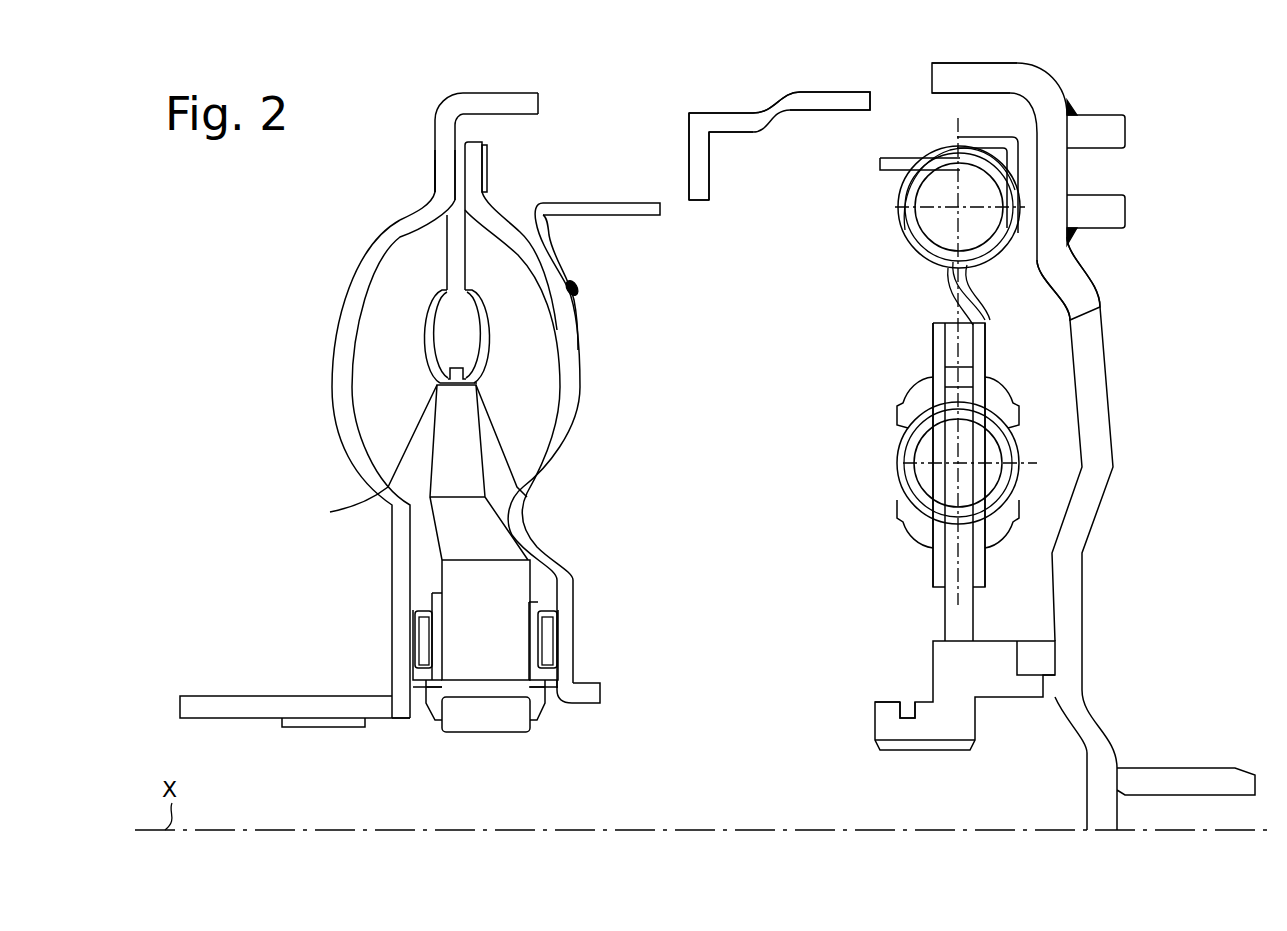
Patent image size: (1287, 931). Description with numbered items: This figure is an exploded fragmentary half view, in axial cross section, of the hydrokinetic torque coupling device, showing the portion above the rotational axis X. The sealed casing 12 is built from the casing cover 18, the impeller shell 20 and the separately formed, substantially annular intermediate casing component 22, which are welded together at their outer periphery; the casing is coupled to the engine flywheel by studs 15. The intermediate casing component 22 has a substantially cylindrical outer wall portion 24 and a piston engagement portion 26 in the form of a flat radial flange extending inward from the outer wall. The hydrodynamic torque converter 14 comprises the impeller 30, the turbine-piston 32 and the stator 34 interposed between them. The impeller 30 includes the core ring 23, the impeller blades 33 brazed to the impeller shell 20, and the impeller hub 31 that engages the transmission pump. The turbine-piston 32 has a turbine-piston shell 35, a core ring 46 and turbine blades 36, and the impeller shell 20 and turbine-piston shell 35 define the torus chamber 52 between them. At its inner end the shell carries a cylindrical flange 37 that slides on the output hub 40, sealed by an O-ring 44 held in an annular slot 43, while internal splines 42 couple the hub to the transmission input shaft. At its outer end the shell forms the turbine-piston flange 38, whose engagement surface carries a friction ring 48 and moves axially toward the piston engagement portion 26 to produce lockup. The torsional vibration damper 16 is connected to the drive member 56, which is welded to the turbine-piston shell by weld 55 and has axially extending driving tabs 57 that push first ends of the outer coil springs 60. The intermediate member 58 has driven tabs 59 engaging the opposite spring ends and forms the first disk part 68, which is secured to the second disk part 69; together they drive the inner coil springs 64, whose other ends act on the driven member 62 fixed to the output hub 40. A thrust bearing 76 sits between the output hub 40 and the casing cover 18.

The sealed casing 12 is at (1059, 78).
The hydrodynamic torque converter 14 is at (350, 267).
The studs 15 is at (1120, 131).
The torsional vibration damper 16 is at (916, 293).
The casing cover 18 is at (1115, 420).
The impeller shell 20 is at (330, 391).
The intermediate casing component 22 is at (770, 96).
The core ring 23 is at (432, 308).
The outer wall portion 24 is at (743, 118).
The piston engagement portion 26 is at (698, 202).
The impeller 30 is at (359, 386).
The impeller hub 31 is at (232, 705).
The turbine-piston 32 is at (556, 386).
The impeller blades 33 is at (380, 312).
The stator 34 is at (428, 458).
The turbine-piston shell 35 is at (563, 417).
The turbine blades 36 is at (523, 413).
The cylindrical flange 37 is at (587, 705).
The turbine-piston flange 38 is at (473, 187).
The output hub 40 is at (960, 678).
The internal splines 42 is at (922, 745).
The annular slot 43 is at (910, 713).
The O-ring 44 is at (895, 710).
The core ring 46 is at (483, 318).
The friction ring 48 is at (490, 157).
The torus chamber 52 is at (470, 342).
The weld 55 is at (578, 290).
The drive member 56 is at (560, 257).
The driving tabs 57 is at (617, 207).
The intermediate member 58 is at (1020, 168).
The driven tabs 59 is at (892, 162).
The first circumferential elastic damping members 60 is at (913, 235).
The driven member 62 is at (965, 613).
The second circumferential elastic damping members 64 is at (913, 440).
The first disk part 68 is at (980, 350).
The second disk part 69 is at (937, 573).
The thrust bearing 76 is at (1043, 658).